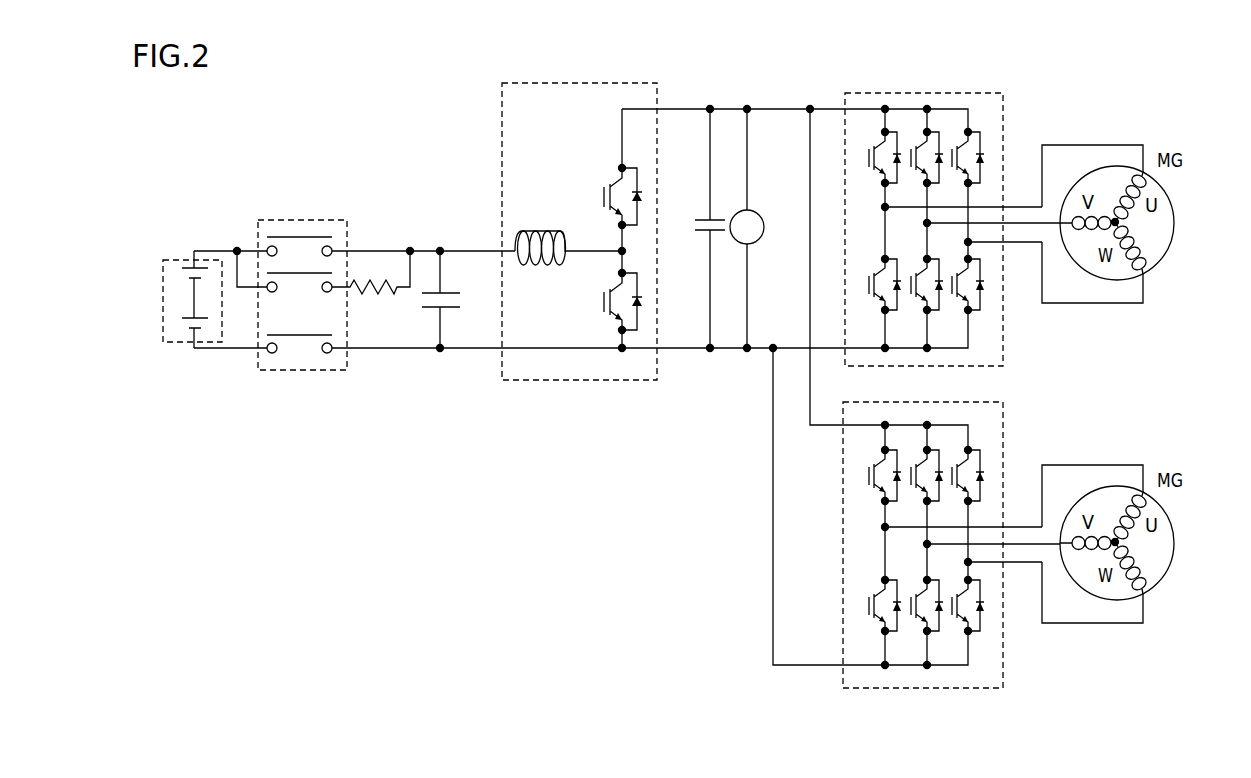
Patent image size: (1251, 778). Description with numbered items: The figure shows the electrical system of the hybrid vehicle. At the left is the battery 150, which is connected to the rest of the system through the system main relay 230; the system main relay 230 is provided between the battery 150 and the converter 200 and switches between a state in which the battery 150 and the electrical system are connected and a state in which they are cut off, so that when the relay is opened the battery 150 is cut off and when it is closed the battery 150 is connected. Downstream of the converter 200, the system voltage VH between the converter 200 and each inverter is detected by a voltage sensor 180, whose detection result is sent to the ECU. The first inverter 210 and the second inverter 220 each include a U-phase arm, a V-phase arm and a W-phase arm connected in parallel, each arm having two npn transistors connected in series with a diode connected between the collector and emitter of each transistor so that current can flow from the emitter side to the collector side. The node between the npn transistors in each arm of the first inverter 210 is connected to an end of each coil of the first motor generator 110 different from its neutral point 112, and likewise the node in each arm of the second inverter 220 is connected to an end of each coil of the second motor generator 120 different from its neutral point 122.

The first motor generator 110 is at (1163, 259).
The neutral point 112 is at (1115, 220).
The second motor generator 120 is at (1163, 579).
The neutral point 122 is at (1115, 540).
The battery 150 is at (180, 258).
The voltage sensor 180 is at (757, 241).
The converter 200 is at (637, 83).
The first inverter 210 is at (1004, 318).
The second inverter 220 is at (1004, 637).
The system main relay 230 is at (300, 219).